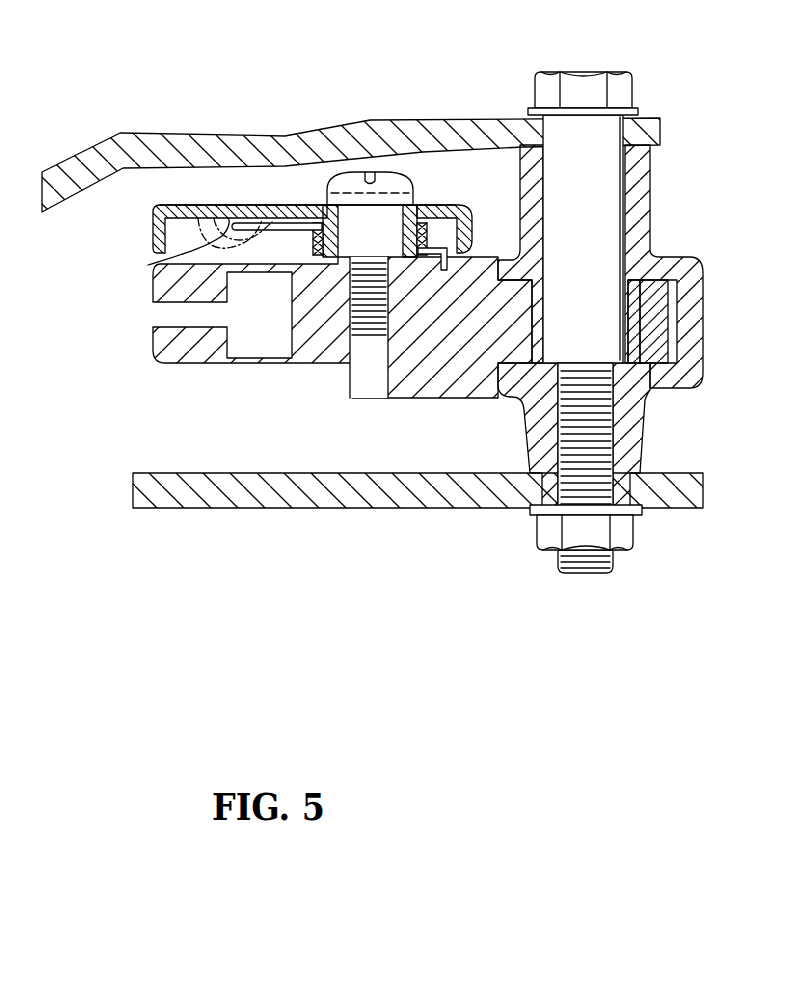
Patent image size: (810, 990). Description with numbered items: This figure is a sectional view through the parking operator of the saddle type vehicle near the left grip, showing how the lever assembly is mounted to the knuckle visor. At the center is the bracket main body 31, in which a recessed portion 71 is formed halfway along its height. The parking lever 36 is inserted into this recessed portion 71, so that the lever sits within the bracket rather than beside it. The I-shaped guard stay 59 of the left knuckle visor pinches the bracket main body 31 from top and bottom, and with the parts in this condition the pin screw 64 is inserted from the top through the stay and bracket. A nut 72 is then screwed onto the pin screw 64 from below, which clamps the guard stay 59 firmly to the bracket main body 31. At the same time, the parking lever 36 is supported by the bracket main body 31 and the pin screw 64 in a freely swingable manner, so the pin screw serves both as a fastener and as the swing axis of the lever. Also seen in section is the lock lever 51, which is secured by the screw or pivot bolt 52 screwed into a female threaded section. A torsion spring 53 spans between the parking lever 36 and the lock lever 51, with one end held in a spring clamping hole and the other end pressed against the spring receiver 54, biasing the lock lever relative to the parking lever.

The bracket main body 31 is at (648, 194).
The parking lever 36 is at (163, 362).
The lock lever 51 is at (153, 236).
The pivot bolt 52 is at (404, 184).
The torsion spring 53 is at (430, 232).
The spring receiver 54 is at (162, 259).
The guard stay 59 is at (399, 128).
The pin screw 64 is at (582, 80).
The recessed portion 71 is at (668, 322).
The nut 72 is at (548, 538).